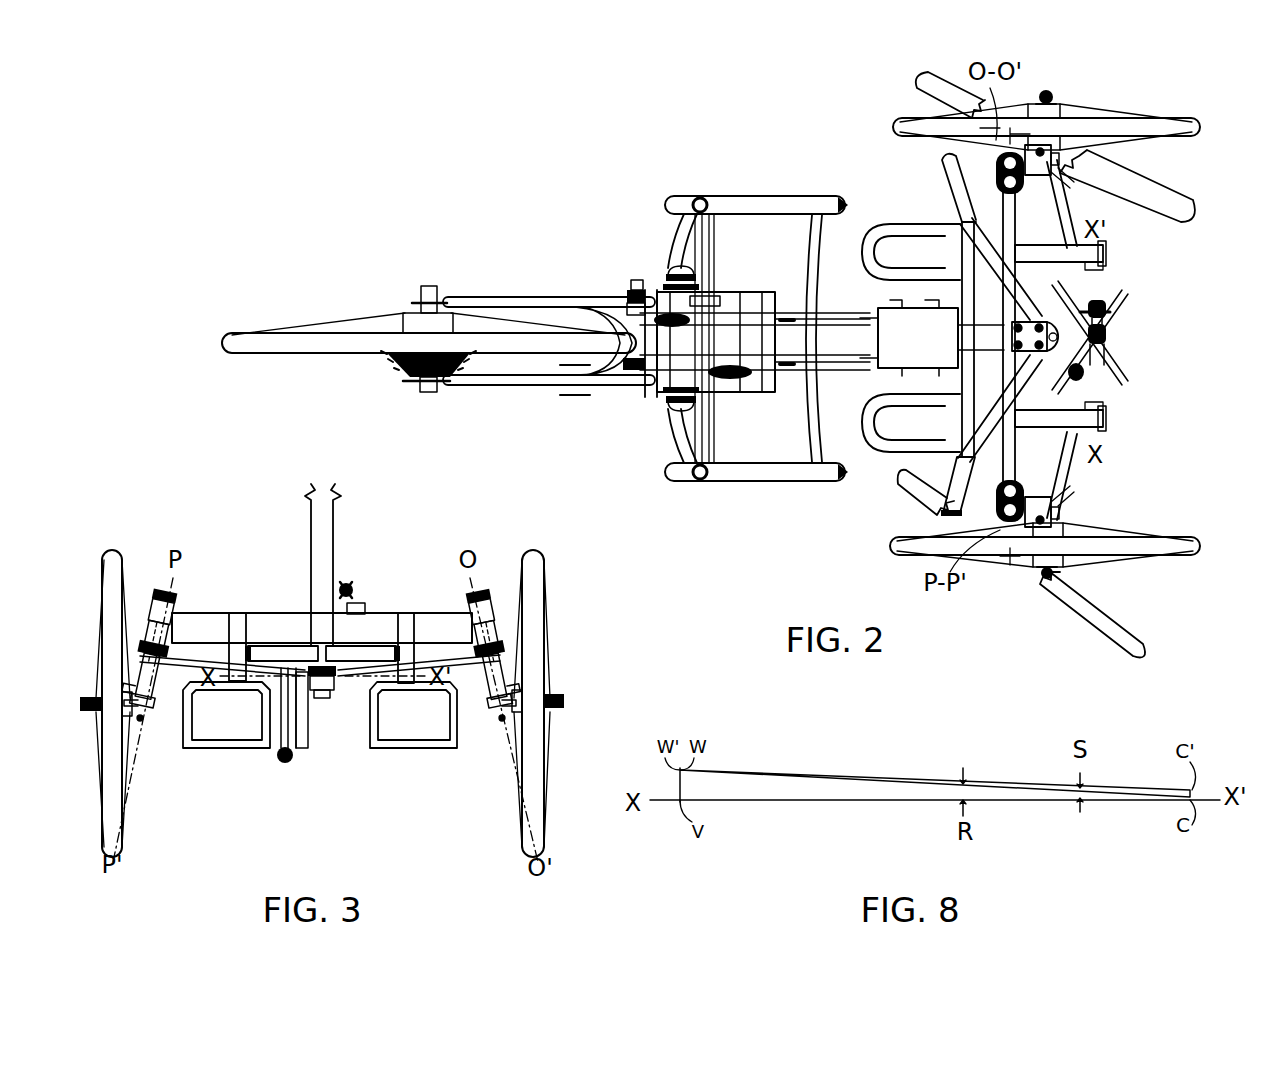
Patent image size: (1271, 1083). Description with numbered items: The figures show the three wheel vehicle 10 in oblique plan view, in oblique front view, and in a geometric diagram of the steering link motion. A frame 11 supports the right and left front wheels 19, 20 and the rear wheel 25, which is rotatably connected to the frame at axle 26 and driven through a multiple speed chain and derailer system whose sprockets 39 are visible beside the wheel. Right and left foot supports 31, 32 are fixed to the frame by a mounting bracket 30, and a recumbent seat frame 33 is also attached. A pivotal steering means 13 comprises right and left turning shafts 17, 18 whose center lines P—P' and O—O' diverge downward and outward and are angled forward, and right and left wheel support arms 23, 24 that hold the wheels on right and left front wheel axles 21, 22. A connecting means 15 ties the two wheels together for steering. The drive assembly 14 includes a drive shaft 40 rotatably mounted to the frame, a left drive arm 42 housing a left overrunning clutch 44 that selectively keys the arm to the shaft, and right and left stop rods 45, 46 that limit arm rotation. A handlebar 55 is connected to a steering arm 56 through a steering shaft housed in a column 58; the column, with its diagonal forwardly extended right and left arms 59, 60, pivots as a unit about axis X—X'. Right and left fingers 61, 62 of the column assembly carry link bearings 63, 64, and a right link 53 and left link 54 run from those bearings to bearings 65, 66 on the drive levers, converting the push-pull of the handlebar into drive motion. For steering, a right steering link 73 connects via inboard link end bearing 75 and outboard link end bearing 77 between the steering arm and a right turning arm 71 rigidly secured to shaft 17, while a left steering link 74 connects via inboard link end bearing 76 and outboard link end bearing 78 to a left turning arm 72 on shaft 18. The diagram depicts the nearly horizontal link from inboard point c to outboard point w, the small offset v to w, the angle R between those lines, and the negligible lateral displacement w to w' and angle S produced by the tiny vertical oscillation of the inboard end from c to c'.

In FIG. 2, the three wheel vehicle 10 is at (576, 154).
In FIG. 2, the frame 11 is at (528, 297).
In FIG. 3, the frame 11 is at (208, 613).
In FIG. 2, the pivotal steering means 13 is at (1122, 294).
In FIG. 2, the drive assembly 14 is at (606, 420).
In FIG. 2, the connecting means 15 is at (1106, 347).
In FIG. 2, the right turning shaft 17 is at (1022, 494).
In FIG. 3, the right turning shaft 17 is at (158, 635).
In FIG. 2, the left turning shaft 18 is at (1024, 182).
In FIG. 3, the left turning shaft 18 is at (486, 636).
In FIG. 2, the right front wheel 19 is at (1148, 555).
In FIG. 3, the right front wheel 19 is at (120, 578).
In FIG. 2, the left front wheel 20 is at (1142, 118).
In FIG. 3, the left front wheel 20 is at (527, 578).
In FIG. 2, the right front wheel axle 21 is at (1040, 574).
In FIG. 3, the right front wheel axle 21 is at (148, 710).
In FIG. 2, the left front wheel axle 22 is at (1052, 94).
In FIG. 3, the left front wheel axle 22 is at (496, 706).
In FIG. 2, the right wheel support arm 23 is at (1062, 517).
In FIG. 3, the right wheel support arm 23 is at (140, 722).
In FIG. 2, the left wheel support arm 24 is at (1066, 170).
In FIG. 3, the left wheel support arm 24 is at (500, 722).
In FIG. 2, the rear wheel 25 is at (268, 333).
In FIG. 2, the axle 26 is at (430, 288).
In FIG. 2, the mounting bracket 30 is at (890, 308).
In FIG. 2, the right foot support 31 is at (885, 455).
In FIG. 3, the right foot support 31 is at (228, 750).
In FIG. 2, the left foot support 32 is at (878, 228).
In FIG. 3, the left foot support 32 is at (412, 746).
In FIG. 2, the seat frame 33 is at (752, 482).
In FIG. 2, the sprockets 39 is at (582, 375).
In FIG. 2, the drive shaft 40 is at (638, 280).
In FIG. 2, the left drive arm 42 is at (628, 292).
In FIG. 2, the left overrunning clutch 44 is at (630, 290).
In FIG. 2, the right stop rod 45 is at (700, 400).
In FIG. 2, the left stop rod 46 is at (700, 318).
In FIG. 2, the right link 53 is at (860, 375).
In FIG. 3, the right link 53 is at (285, 735).
In FIG. 2, the left link 54 is at (826, 312).
In FIG. 2, the handlebar 55 is at (950, 226).
In FIG. 3, the steering arm 56 is at (324, 700).
In FIG. 2, the column 58 is at (1052, 320).
In FIG. 3, the column 58 is at (333, 546).
In FIG. 2, the right arm 59 is at (1102, 402).
In FIG. 3, the right arm 59 is at (305, 645).
In FIG. 2, the left arm 60 is at (1100, 292).
In FIG. 3, the left arm 60 is at (375, 645).
In FIG. 3, the right finger 61 is at (305, 740).
In FIG. 3, the left finger 62 is at (362, 603).
In FIG. 2, the link bearing 63 is at (1072, 380).
In FIG. 3, the link bearing 63 is at (282, 764).
In FIG. 2, the link bearing 64 is at (1108, 322).
In FIG. 3, the link bearing 64 is at (344, 584).
In FIG. 2, the bearing 65 is at (738, 380).
In FIG. 2, the bearing 66 is at (690, 306).
In FIG. 2, the right turning arm 71 is at (1056, 508).
In FIG. 2, the left turning arm 72 is at (1060, 160).
In FIG. 2, the right steering link 73 is at (1070, 456).
In FIG. 3, the right steering link 73 is at (192, 668).
In FIG. 2, the left steering link 74 is at (1070, 224).
In FIG. 3, the left steering link 74 is at (462, 668).
In FIG. 3, the inboard link end bearing 75 is at (312, 690).
In FIG. 3, the inboard link end bearing 76 is at (330, 680).
In FIG. 3, the outboard link end bearing 77 is at (140, 660).
In FIG. 3, the outboard link end bearing 78 is at (500, 660).